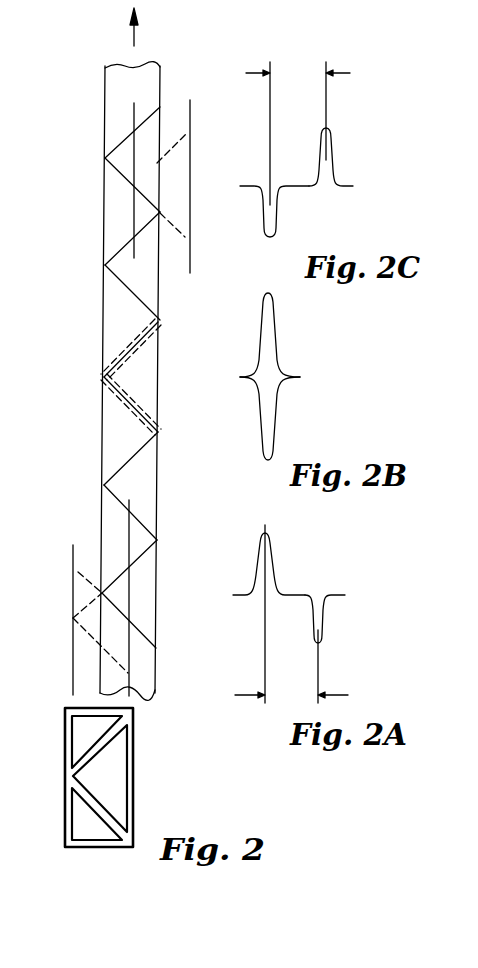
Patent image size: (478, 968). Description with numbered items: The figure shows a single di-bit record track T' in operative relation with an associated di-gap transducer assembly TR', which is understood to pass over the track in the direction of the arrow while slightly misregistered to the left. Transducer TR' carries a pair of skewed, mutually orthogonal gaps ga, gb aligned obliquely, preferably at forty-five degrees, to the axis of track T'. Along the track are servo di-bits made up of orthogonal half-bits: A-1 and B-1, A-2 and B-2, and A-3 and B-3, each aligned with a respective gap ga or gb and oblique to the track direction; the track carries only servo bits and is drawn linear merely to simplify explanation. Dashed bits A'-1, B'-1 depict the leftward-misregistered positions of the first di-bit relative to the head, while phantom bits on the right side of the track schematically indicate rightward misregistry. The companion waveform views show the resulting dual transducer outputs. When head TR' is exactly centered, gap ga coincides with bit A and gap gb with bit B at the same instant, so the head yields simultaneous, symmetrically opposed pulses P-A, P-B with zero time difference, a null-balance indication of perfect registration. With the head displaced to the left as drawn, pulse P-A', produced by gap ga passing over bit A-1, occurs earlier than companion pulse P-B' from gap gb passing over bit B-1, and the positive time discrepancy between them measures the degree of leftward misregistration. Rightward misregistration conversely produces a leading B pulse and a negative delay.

In FIG. 2, the di-bit data track T' is at (108, 354).
In FIG. 2, the di-bit half A of third di-bit A-3 is at (117, 249).
In FIG. 2, the di-bit half B of third di-bit B-3 is at (118, 283).
In FIG. 2, the di-bit half A of second di-bit A-2 is at (117, 364).
In FIG. 2, the di-bit half B of second di-bit B-2 is at (122, 398).
In FIG. 2, the di-bit half A of first di-bit A-1 is at (124, 570).
In FIG. 2, the di-bit half B of first di-bit B-1 is at (146, 642).
In FIG. 2, the leftward-misregistered bit A'-1 is at (58, 608).
In FIG. 2, the leftward-misregistered bit B'-1 is at (71, 607).
In FIG. 2, the di-gap transducer assembly TR' is at (132, 777).
In FIG. 2, the transducer gap ga is at (85, 752).
In FIG. 2, the transducer gap gb is at (118, 822).
In FIG. 2B, the servo output pulse P-A is at (264, 332).
In FIG. 2B, the servo output pulse P-B is at (261, 418).
In FIG. 2A, the output pulse P-A' is at (259, 562).
In FIG. 2A, the output pulse P-B' is at (339, 623).